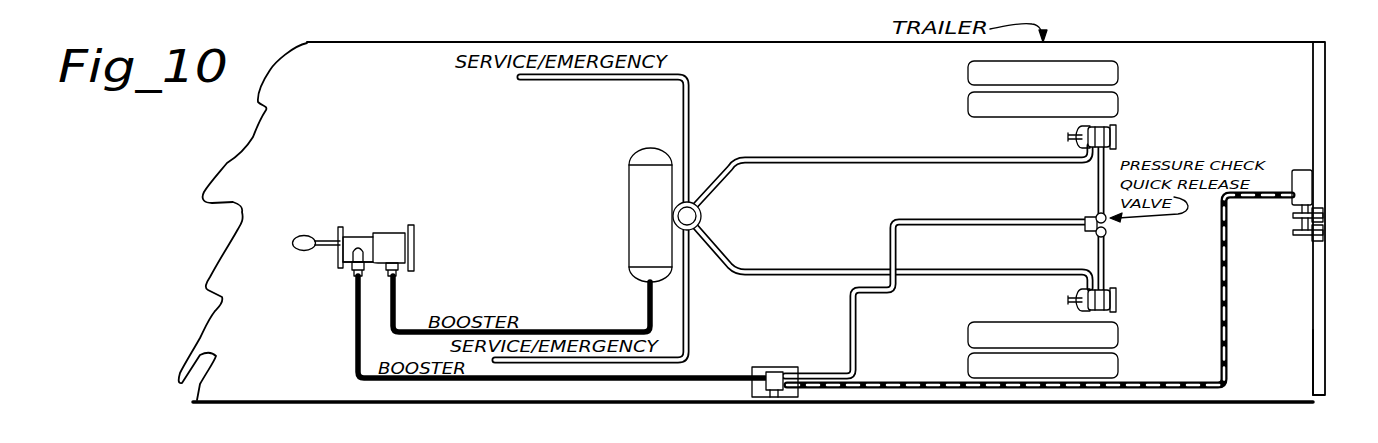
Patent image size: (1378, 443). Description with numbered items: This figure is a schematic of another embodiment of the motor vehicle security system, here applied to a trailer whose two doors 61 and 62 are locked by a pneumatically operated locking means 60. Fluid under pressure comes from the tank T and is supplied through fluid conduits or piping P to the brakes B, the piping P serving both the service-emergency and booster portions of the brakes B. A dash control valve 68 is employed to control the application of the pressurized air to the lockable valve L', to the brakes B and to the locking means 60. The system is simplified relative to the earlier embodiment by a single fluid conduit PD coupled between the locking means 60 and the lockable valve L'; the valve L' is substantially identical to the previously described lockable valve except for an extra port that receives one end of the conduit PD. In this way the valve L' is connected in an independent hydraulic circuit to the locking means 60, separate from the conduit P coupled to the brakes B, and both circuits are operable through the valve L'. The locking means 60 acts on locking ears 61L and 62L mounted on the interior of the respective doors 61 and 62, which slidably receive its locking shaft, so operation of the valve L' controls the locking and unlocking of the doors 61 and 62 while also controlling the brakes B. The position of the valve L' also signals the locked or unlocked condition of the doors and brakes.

The dash control valve 68 is at (414, 258).
The trailer door 61 is at (1325, 109).
The trailer door 62 is at (1325, 346).
The locking means 60 is at (1312, 178).
The locking ear 61L is at (1324, 214).
The locking ear 62L is at (1324, 239).
The tank T is at (628, 230).
The fluid conduit P is at (691, 88).
The fluid conduit PD is at (1229, 312).
The braking means B is at (1117, 130).
The lockable valve L' is at (775, 363).